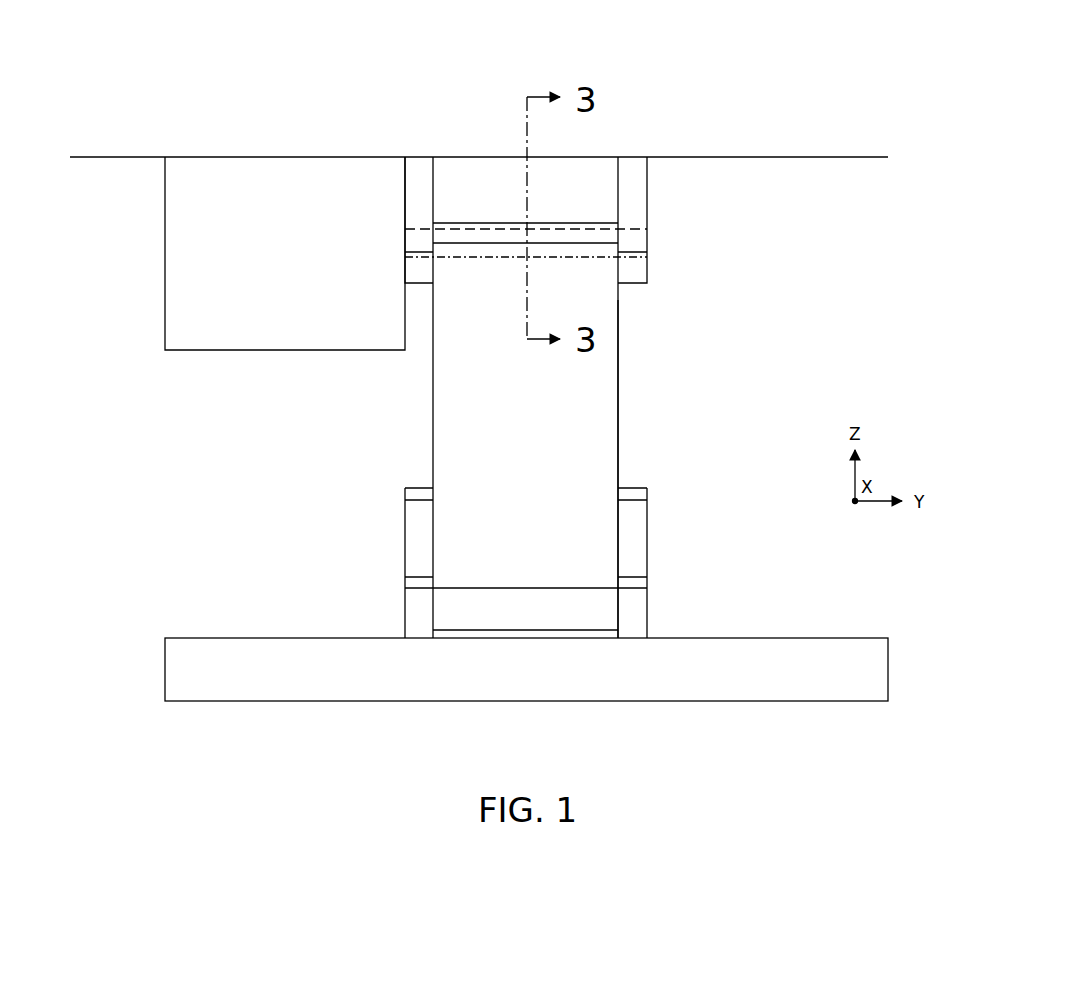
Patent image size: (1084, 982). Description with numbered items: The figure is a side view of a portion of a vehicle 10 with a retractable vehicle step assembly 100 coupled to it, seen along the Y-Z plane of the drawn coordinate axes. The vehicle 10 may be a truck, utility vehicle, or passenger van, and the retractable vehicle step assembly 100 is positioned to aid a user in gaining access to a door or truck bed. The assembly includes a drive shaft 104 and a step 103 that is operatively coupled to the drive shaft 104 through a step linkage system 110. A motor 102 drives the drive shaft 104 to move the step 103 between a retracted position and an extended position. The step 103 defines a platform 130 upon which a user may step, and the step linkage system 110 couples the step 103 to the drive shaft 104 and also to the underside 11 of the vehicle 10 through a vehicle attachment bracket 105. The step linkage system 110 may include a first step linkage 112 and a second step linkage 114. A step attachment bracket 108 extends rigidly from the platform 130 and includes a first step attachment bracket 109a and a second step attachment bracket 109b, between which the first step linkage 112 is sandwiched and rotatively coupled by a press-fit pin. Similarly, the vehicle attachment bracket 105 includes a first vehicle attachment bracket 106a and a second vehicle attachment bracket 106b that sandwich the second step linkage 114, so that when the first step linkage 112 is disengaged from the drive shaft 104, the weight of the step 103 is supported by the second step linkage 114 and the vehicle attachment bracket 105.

The retractable vehicle step assembly 100 is at (849, 68).
The vehicle 10 is at (122, 203).
The underside 11 is at (88, 160).
The motor 102 is at (165, 286).
The drive shaft 104 is at (581, 231).
The vehicle attachment bracket 105 is at (688, 201).
The first vehicle attachment bracket 106a is at (420, 157).
The second vehicle attachment bracket 106b is at (636, 157).
The step attachment bracket 108 is at (470, 563).
The first step attachment bracket 109a is at (405, 513).
The second step attachment bracket 109b is at (647, 513).
The step linkage system 110 is at (748, 350).
The first step linkage 112 is at (632, 338).
The second step linkage 114 is at (620, 392).
The platform 130 is at (862, 638).
The step 103 is at (872, 720).